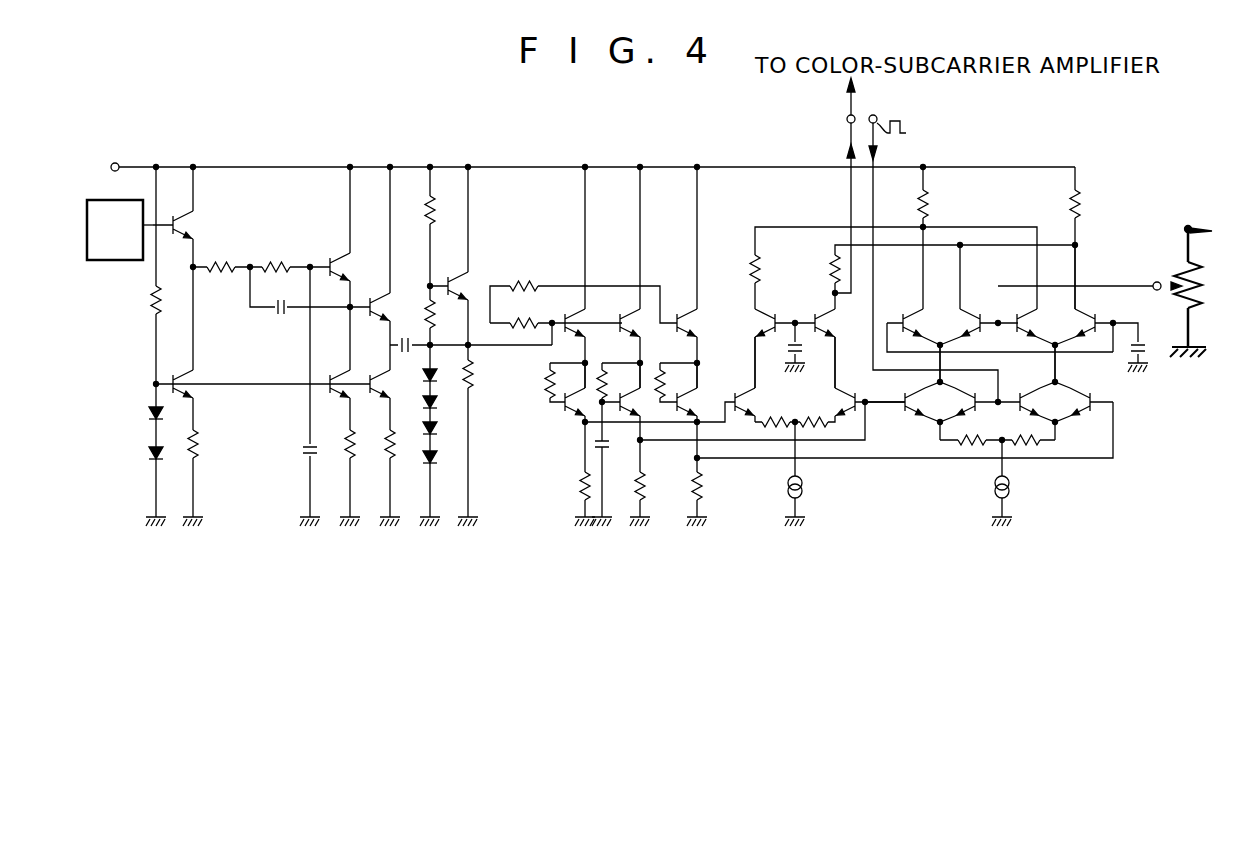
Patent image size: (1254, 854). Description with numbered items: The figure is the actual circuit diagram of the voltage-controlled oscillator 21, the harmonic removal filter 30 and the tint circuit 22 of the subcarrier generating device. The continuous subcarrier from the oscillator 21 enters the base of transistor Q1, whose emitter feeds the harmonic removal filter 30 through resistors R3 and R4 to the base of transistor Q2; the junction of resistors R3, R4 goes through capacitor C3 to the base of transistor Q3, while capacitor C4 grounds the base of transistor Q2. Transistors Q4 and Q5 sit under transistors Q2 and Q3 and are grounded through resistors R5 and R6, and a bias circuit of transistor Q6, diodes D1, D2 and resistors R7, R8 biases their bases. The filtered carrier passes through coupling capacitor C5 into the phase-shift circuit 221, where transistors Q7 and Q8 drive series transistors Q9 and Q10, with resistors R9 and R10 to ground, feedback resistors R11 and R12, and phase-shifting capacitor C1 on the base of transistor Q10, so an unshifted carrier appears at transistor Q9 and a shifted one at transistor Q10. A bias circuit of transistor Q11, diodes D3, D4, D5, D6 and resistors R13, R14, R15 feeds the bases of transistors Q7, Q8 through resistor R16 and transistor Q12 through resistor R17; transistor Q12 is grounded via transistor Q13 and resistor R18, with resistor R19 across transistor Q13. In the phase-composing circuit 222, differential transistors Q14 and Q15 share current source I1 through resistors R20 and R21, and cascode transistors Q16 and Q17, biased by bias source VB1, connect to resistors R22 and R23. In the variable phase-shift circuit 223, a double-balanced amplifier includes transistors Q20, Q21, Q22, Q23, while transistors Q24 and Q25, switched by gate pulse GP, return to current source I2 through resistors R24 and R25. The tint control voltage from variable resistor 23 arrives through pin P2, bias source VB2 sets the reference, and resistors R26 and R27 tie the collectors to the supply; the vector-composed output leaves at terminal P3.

The VCO 21 is at (108, 262).
The tint circuit 22 is at (497, 138).
The variable resistor 23 is at (1180, 262).
The harmonic removal filter 30 is at (238, 500).
The phase-shift circuit 221 is at (512, 502).
The phase-composing circuit 222 is at (756, 502).
The variable phase-shift circuit 223 is at (962, 502).
The pin P2 is at (1153, 282).
The terminal P3 is at (847, 120).
The gate pulse GP is at (933, 258).
The bias source VB1 is at (804, 352).
The bias source VB2 is at (1152, 350).
The constant current source I1 is at (804, 474).
The constant current source I2 is at (1011, 483).
The phase-shifting capacitor C1 is at (612, 440).
The capacitor C3 is at (276, 310).
The capacitor C4 is at (302, 450).
The coupling capacitor C5 is at (394, 347).
The diode D1 is at (149, 410).
The diode D2 is at (149, 450).
The diode D3 is at (440, 380).
The diode D4 is at (440, 408).
The diode D5 is at (440, 434).
The diode D6 is at (440, 462).
The transistor Q1 is at (196, 220).
The transistor Q2 is at (340, 262).
The transistor Q3 is at (380, 300).
The transistor Q4 is at (332, 396).
The transistor Q5 is at (372, 396).
The transistor Q6 is at (186, 381).
The transistor Q7 is at (568, 312).
The transistor Q8 is at (622, 312).
The transistor Q9 is at (566, 430).
The transistor Q10 is at (636, 425).
The transistor Q11 is at (458, 280).
The transistor Q12 is at (680, 312).
The transistor Q13 is at (690, 392).
The transistor Q14 is at (745, 398).
The transistor Q15 is at (843, 395).
The transistor Q16 is at (762, 318).
The transistor Q17 is at (830, 326).
The transistor Q20 is at (905, 298).
The transistor Q21 is at (976, 326).
The transistor Q22 is at (1022, 312).
The transistor Q23 is at (1092, 326).
The transistor Q24 is at (972, 404).
The transistor Q25 is at (1022, 405).
The resistor R3 is at (216, 262).
The resistor R4 is at (280, 262).
The resistor R5 is at (342, 456).
The resistor R6 is at (382, 456).
The resistor R7 is at (152, 302).
The resistor R8 is at (200, 444).
The resistor R9 is at (578, 488).
The resistor R10 is at (646, 488).
The resistor R11 is at (542, 400).
The resistor R12 is at (618, 382).
The resistor R13 is at (424, 205).
The resistor R14 is at (424, 305).
The resistor R15 is at (472, 366).
The resistor R16 is at (540, 320).
The resistor R17 is at (525, 280).
The resistor R18 is at (706, 488).
The resistor R19 is at (676, 352).
The resistor R20 is at (762, 430).
The resistor R21 is at (818, 430).
The resistor R22 is at (746, 272).
The resistor R23 is at (826, 272).
The resistor R24 is at (970, 448).
The resistor R25 is at (1028, 448).
The resistor R26 is at (928, 208).
The resistor R27 is at (1080, 208).